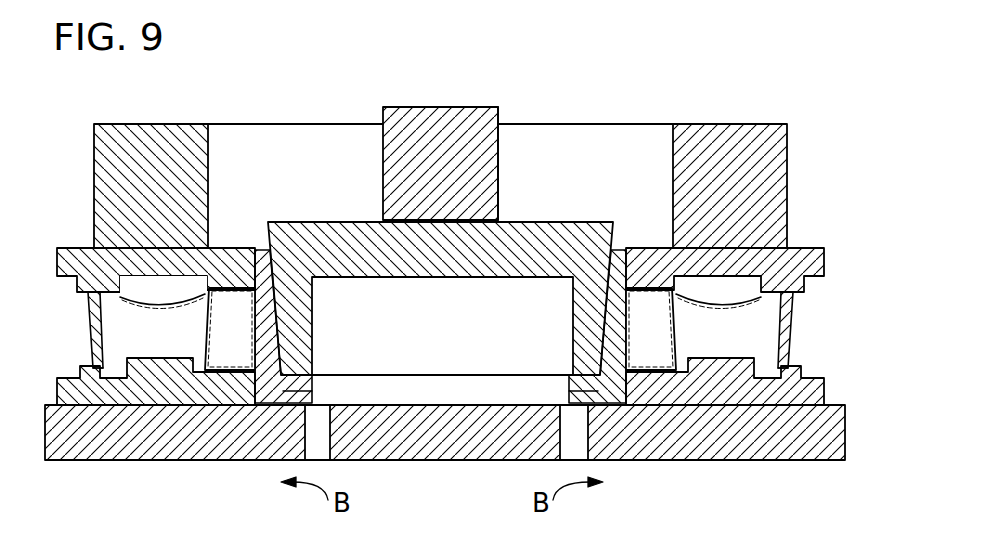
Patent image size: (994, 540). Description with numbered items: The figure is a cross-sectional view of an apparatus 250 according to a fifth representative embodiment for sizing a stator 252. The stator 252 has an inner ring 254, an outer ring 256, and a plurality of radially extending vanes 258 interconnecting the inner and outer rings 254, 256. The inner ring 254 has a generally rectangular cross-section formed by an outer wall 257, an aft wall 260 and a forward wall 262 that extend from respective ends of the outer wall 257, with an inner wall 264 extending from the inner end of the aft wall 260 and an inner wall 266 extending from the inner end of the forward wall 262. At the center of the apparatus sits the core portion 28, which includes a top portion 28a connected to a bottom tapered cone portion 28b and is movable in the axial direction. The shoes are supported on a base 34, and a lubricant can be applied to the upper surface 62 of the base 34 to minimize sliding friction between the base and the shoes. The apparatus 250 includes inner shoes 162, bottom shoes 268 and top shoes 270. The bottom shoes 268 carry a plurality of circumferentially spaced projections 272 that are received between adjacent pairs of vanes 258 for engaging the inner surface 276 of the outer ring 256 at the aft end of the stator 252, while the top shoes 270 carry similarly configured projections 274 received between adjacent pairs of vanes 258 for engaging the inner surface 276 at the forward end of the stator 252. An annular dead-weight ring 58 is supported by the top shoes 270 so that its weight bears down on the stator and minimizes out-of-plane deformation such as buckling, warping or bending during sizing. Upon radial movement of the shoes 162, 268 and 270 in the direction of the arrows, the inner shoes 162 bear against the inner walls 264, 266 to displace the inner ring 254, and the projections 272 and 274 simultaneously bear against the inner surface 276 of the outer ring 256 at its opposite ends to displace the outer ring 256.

The apparatus 250 is at (700, 79).
The dead-weight ring 58 is at (162, 124).
The core portion 28 is at (505, 149).
The top portion 28a is at (499, 172).
The bottom tapered cone portion 28b is at (335, 221).
The forward wall 262 is at (233, 250).
The projections 274 is at (100, 256).
The top shoes 270 is at (150, 262).
The inner surface 276 is at (90, 312).
The outer ring 256 is at (94, 346).
The outer wall 257 is at (212, 318).
The vanes 258 is at (772, 328).
The bottom shoes 268 is at (140, 395).
The projections 272 is at (113, 375).
The stator 252 is at (183, 370).
The aft wall 260 is at (238, 372).
The inner wall 266 is at (272, 310).
The inner ring 254 is at (257, 335).
The inner wall 264 is at (257, 347).
The inner shoes 162 is at (272, 382).
The upper surface 62 is at (381, 403).
The base 34 is at (669, 445).